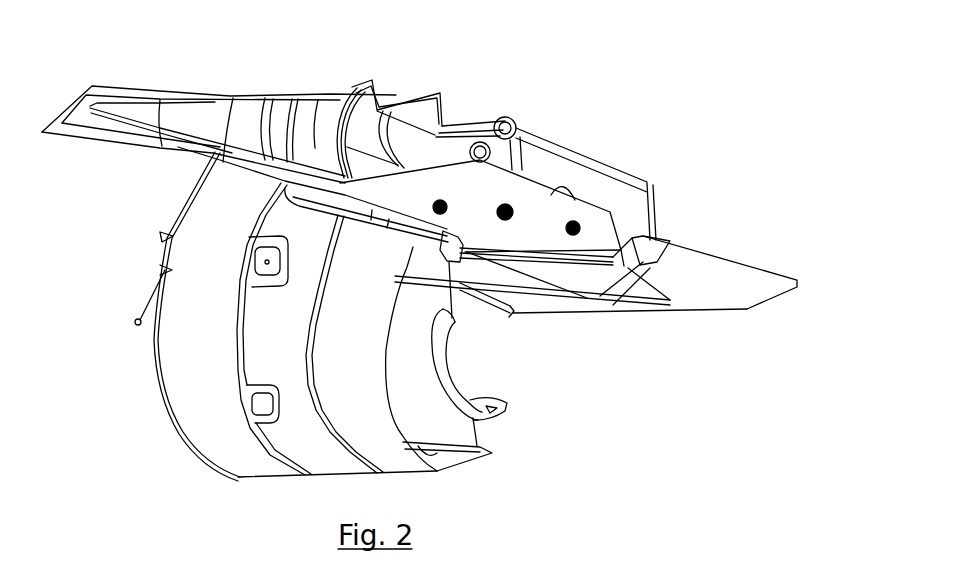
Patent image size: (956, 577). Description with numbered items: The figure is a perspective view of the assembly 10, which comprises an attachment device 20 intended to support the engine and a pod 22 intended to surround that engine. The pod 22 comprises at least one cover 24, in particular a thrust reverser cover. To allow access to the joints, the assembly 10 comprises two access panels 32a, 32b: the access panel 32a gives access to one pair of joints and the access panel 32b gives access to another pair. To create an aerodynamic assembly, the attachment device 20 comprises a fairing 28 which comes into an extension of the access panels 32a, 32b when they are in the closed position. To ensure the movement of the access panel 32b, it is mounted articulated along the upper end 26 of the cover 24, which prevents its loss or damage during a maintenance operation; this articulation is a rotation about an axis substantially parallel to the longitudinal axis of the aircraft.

The assembly 10 is at (722, 366).
The attachment device 20 is at (580, 87).
The pod 22 is at (582, 424).
The cover 24 is at (197, 407).
The upper end 26 is at (250, 177).
The fairing 28 is at (254, 114).
The access panel 32a is at (230, 167).
The access panel 32b is at (313, 193).